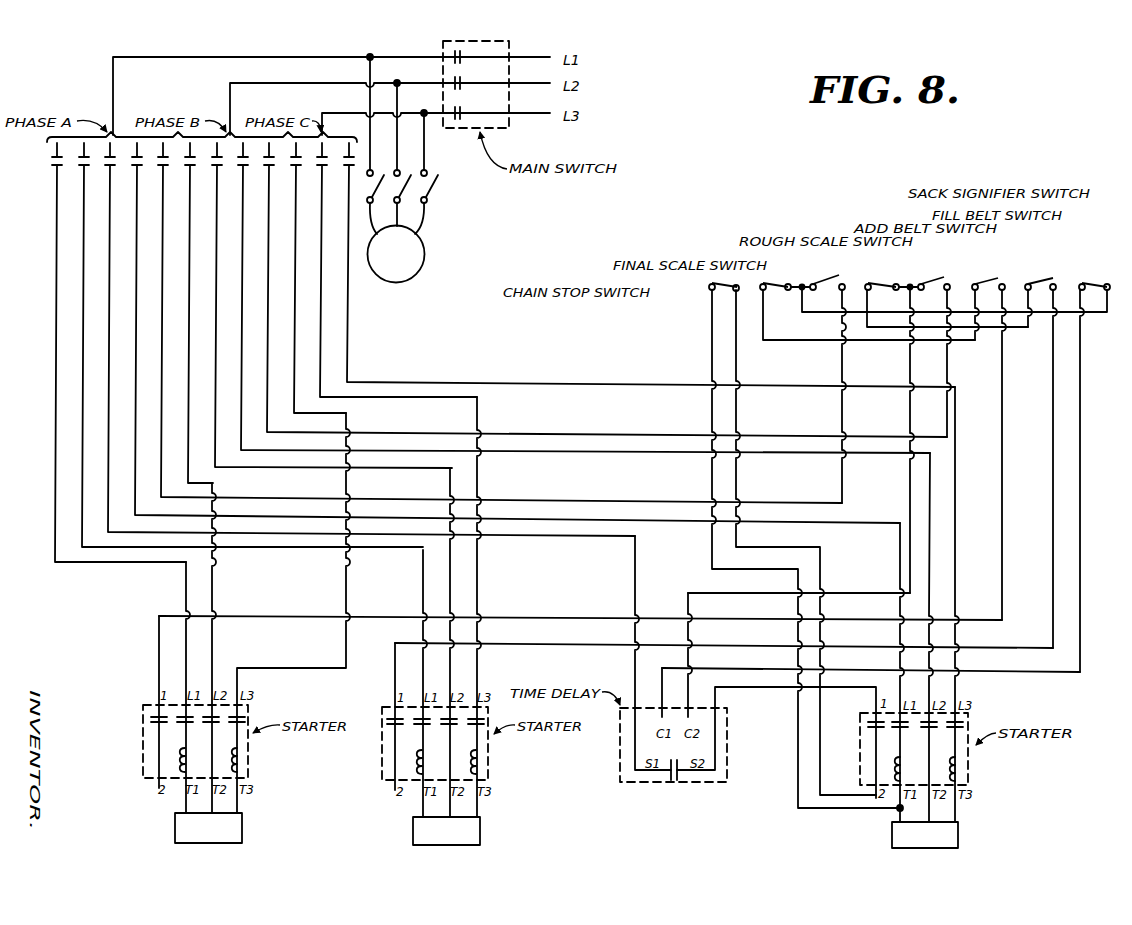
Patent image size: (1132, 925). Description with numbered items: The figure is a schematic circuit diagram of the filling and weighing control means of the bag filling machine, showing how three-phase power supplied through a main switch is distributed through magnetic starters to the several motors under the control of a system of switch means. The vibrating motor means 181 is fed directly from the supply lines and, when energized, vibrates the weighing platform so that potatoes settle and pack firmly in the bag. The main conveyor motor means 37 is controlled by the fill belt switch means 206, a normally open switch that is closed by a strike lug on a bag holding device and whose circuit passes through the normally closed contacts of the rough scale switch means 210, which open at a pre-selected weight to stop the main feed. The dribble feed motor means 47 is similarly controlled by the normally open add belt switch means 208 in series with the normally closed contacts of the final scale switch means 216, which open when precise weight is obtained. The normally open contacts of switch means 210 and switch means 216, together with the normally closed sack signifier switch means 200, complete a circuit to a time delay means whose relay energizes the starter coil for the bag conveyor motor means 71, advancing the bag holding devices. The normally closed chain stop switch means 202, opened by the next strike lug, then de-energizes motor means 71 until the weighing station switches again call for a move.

The motor means 181 is at (424, 251).
The switch means 202 is at (706, 289).
The switch means 216 is at (819, 259).
The switch means 210 is at (947, 245).
The switch means 208 is at (998, 270).
The switch means 206 is at (1056, 268).
The switch means 200 is at (1106, 272).
The motor means 47 is at (242, 831).
The motor means 37 is at (480, 833).
The motor means 71 is at (958, 837).